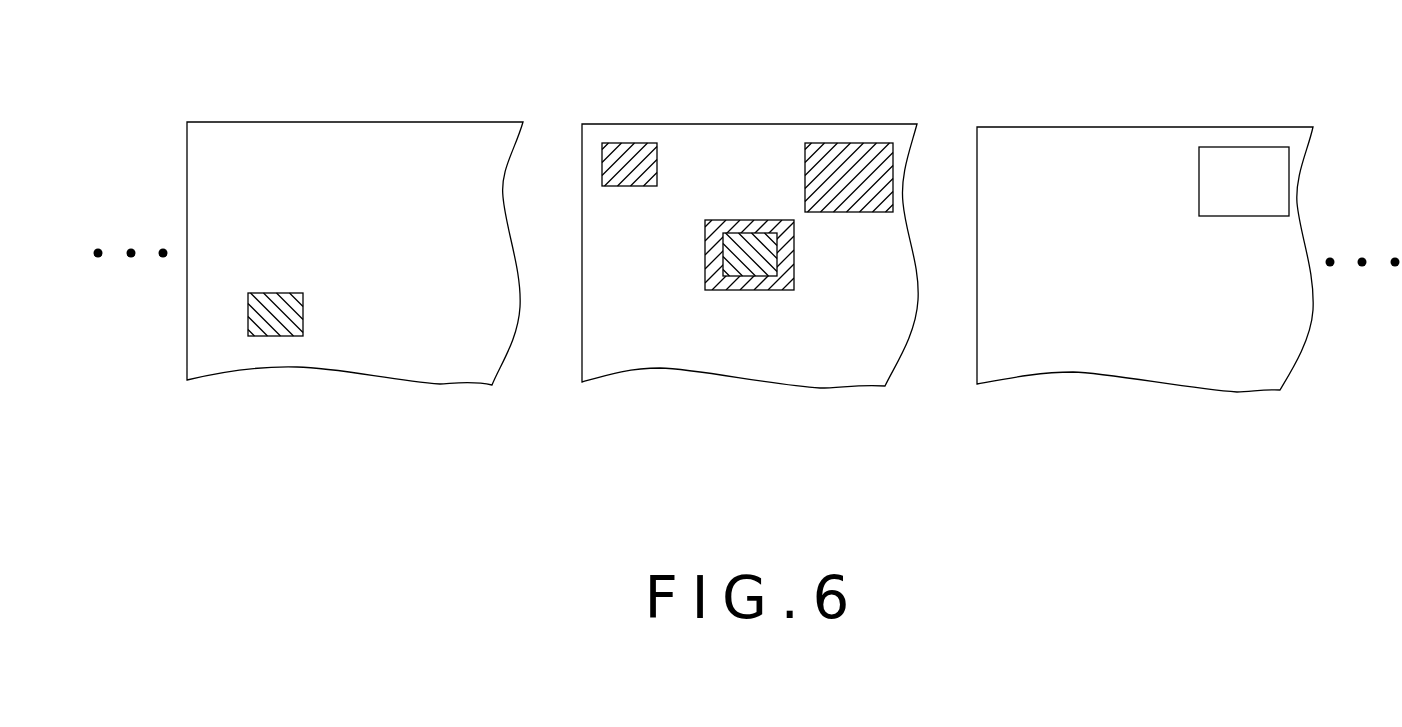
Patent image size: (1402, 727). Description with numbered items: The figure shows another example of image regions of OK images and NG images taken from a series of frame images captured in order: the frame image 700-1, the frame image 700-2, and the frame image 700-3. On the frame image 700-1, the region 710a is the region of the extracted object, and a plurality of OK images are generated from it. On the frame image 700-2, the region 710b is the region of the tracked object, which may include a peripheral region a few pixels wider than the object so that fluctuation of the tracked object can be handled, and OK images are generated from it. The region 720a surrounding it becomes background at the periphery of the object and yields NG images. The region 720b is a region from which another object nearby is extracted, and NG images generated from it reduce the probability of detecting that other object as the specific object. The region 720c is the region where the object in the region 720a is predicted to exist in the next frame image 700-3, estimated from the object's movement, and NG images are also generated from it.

The frame image 700-1 is at (355, 122).
The frame image 700-2 is at (750, 123).
The frame image 700-3 is at (1143, 127).
The region 710a is at (273, 293).
The region 710b is at (748, 238).
The region 720a is at (777, 285).
The region 720b is at (620, 148).
The region 720c is at (857, 208).